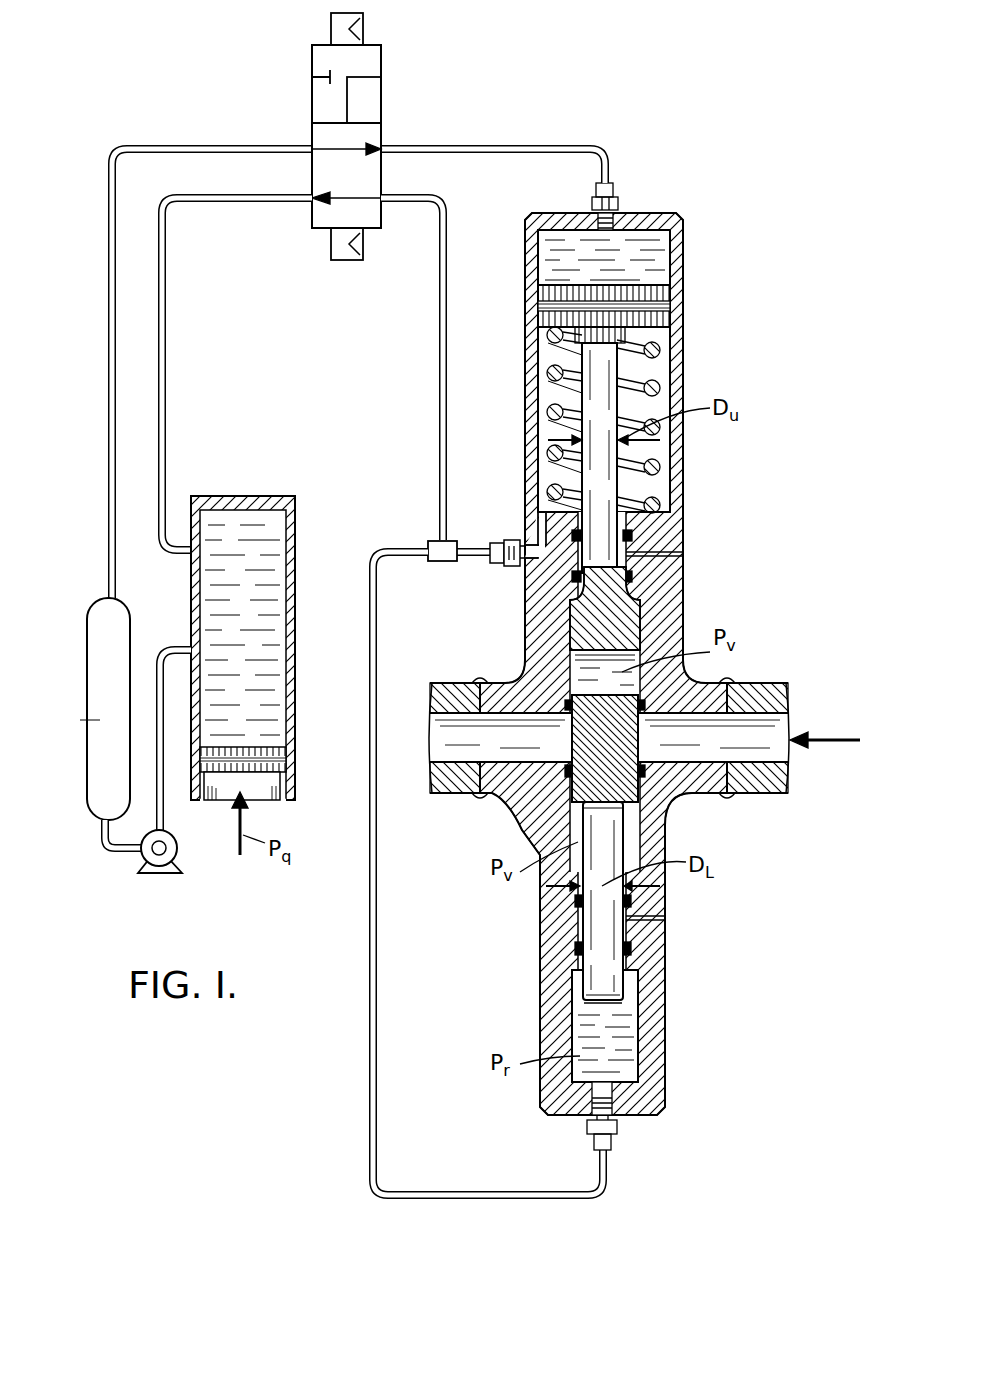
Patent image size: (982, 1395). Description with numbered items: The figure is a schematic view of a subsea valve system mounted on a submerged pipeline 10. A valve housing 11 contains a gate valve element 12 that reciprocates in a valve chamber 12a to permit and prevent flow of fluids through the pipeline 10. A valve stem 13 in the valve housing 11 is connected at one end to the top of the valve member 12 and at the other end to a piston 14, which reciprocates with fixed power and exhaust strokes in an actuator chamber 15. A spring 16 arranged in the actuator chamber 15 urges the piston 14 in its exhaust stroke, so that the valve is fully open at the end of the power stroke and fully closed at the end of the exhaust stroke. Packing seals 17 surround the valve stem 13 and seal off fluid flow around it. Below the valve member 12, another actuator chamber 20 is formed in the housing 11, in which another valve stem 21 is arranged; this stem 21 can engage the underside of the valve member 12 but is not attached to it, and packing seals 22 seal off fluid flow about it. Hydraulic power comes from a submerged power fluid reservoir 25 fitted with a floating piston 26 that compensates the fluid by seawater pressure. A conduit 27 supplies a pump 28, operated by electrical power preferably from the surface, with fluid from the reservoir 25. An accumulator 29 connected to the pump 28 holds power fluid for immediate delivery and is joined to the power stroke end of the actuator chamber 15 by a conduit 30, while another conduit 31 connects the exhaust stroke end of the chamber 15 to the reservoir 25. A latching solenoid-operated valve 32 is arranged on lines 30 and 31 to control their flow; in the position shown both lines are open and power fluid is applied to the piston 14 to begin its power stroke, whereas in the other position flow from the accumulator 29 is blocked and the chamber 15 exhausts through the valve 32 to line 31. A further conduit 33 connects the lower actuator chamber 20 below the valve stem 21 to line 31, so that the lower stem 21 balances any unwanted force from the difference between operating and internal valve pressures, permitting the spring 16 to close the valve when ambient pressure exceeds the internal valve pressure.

The submerged pipeline 10 is at (762, 695).
The valve housing 11 is at (683, 240).
The gate valve element 12 is at (562, 790).
The valve chamber 12a is at (640, 840).
The valve stem 13 is at (612, 385).
The piston 14 is at (660, 300).
The actuator chamber 15 is at (562, 250).
The spring 16 is at (556, 378).
The packing seals 17 is at (634, 536).
The actuator chamber 20 is at (628, 1040).
The valve stem 21 is at (600, 982).
The packing seals 22 is at (575, 948).
The hydraulic power fluid reservoir 25 is at (256, 497).
The floating piston 26 is at (248, 752).
The conduit 27 is at (168, 648).
The pump 28 is at (142, 858).
The accumulator 29 is at (86, 712).
The conduit 30 is at (512, 148).
The conduit 31 is at (167, 392).
The solenoid-operated valve 32 is at (368, 62).
The conduit 33 is at (378, 890).